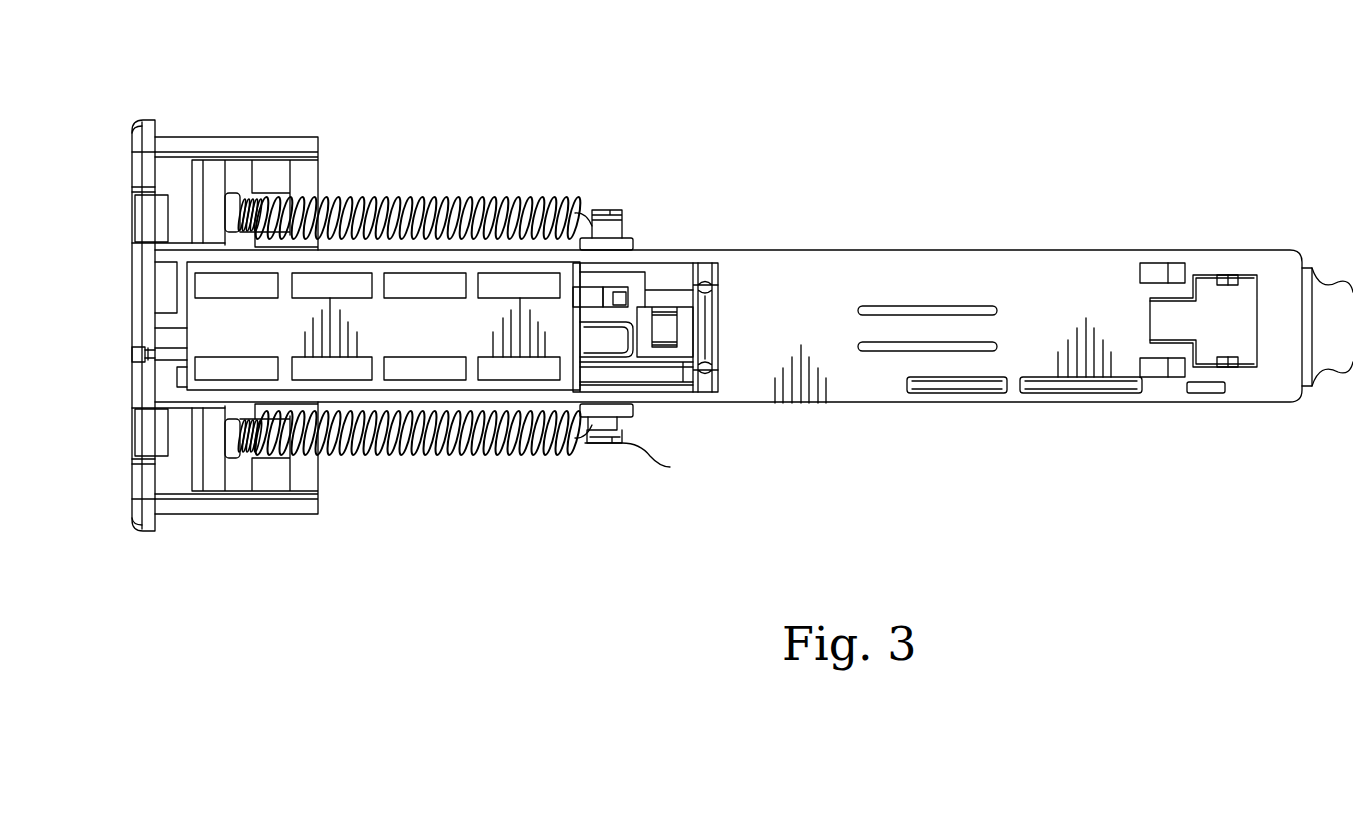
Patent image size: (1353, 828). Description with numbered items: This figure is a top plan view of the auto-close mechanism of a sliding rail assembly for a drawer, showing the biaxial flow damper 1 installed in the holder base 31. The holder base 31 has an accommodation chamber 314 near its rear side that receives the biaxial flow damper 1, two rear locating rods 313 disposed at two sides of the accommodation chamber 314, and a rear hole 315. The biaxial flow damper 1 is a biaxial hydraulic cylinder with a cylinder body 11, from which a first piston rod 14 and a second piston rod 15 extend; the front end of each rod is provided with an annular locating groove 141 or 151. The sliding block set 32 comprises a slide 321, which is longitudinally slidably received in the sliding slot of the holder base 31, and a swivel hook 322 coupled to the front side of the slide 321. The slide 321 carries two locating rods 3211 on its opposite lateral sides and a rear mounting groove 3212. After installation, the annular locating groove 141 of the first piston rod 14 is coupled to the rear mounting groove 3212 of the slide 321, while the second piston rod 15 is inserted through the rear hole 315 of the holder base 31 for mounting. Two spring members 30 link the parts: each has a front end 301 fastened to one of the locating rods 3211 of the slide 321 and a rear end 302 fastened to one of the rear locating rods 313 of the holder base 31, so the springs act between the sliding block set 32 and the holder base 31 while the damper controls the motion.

The biaxial flow damper 1 is at (418, 263).
The cylinder body 11 is at (340, 273).
The first piston rod 14 is at (588, 297).
The annular locating groove 141 is at (637, 278).
The second piston rod 15 is at (132, 350).
The annular locating groove 151 is at (150, 360).
The spring members 30 is at (555, 198).
The front end 301 is at (670, 467).
The rear end 302 is at (243, 212).
The holder base 31 is at (908, 250).
The rear locating rods 313 is at (232, 205).
The accommodation chamber 314 is at (462, 263).
The rear hole 315 is at (152, 350).
The sliding block set 32 is at (788, 165).
The slide 321 is at (647, 272).
The locating rods 3211 is at (600, 447).
The rear mounting groove 3212 is at (610, 297).
The swivel hook 322 is at (698, 283).